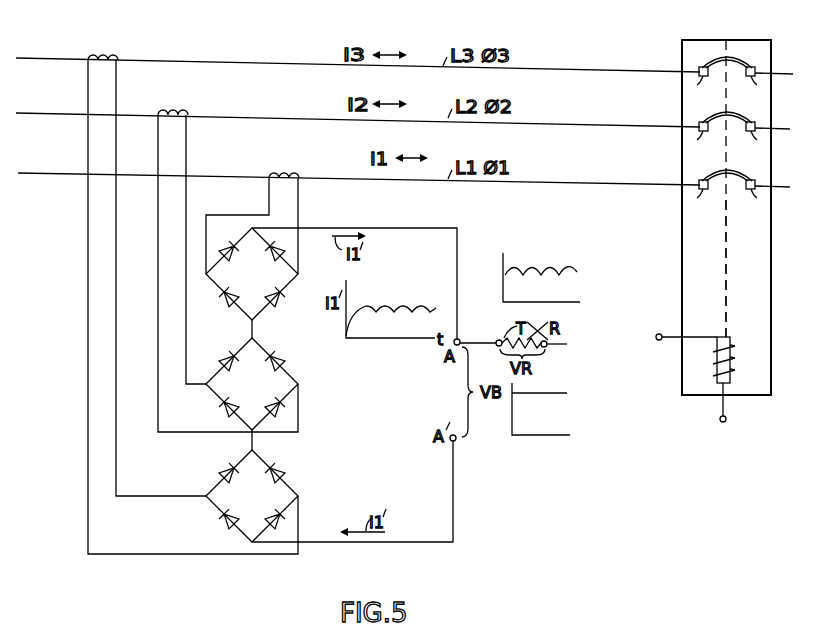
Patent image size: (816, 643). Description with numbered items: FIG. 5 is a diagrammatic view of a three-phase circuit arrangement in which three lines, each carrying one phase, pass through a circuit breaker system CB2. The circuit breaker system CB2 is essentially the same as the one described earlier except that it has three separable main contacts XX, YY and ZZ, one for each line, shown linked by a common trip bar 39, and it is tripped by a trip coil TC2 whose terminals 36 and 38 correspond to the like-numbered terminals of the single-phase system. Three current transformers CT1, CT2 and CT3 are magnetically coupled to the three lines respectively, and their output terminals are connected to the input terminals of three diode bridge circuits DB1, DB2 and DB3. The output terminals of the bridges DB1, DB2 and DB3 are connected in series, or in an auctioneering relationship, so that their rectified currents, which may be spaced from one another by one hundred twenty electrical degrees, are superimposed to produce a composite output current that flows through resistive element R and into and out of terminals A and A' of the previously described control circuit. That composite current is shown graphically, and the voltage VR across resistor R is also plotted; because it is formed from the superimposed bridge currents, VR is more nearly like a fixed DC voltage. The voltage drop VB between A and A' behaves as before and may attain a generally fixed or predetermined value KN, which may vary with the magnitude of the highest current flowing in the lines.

The trip coil terminal 36 is at (655, 313).
The trip coil terminal 38 is at (759, 406).
The trip bar of circuit breaker 39 is at (727, 243).
The circuit breaker system CB2 is at (683, 52).
The trip coil TC2 is at (740, 328).
The current transformer CT1 is at (291, 175).
The current transformer CT2 is at (180, 114).
The current transformer CT3 is at (112, 58).
The diode bridge circuit DB1 is at (252, 274).
The diode bridge circuit DB2 is at (252, 384).
The diode bridge circuit DB3 is at (252, 496).
The voltage across resistive element VR is at (529, 283).
The predetermined voltage value KN is at (553, 409).